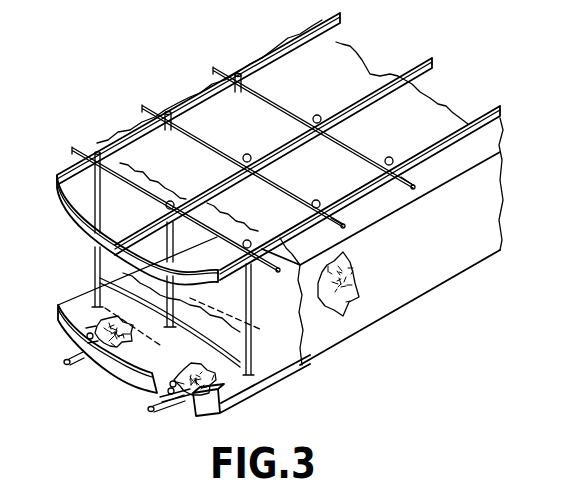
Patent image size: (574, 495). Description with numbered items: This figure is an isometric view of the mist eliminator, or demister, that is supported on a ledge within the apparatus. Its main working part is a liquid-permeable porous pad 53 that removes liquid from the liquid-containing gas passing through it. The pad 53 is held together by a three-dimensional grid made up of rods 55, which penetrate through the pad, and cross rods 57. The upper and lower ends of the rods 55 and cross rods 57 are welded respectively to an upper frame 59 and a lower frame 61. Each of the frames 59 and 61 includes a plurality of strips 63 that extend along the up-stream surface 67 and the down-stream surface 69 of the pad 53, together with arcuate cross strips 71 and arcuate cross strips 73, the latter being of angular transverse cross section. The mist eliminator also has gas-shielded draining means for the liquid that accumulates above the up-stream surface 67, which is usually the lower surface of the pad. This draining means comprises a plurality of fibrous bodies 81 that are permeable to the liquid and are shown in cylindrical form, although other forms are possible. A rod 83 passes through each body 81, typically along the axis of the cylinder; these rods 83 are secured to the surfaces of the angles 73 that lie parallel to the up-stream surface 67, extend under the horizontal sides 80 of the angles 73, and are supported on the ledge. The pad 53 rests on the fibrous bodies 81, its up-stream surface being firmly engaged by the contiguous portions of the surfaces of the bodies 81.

The liquid-permeable porous pad 53 is at (456, 113).
The rods 55 is at (248, 153).
The cross rods 57 is at (374, 213).
The upper frame 59 is at (272, 63).
The lower frame 61 is at (273, 381).
The strips 63 is at (341, 20).
The upstream surface 67 is at (429, 291).
The downstream surface 69 is at (372, 73).
The arcuate cross strips 71 is at (108, 218).
The arcuate cross strips of angular transverse cross section 73 is at (72, 327).
The horizontal sides of the angles 80 is at (113, 362).
The fibrous bodies 81 is at (194, 374).
The rod 83 is at (65, 363).